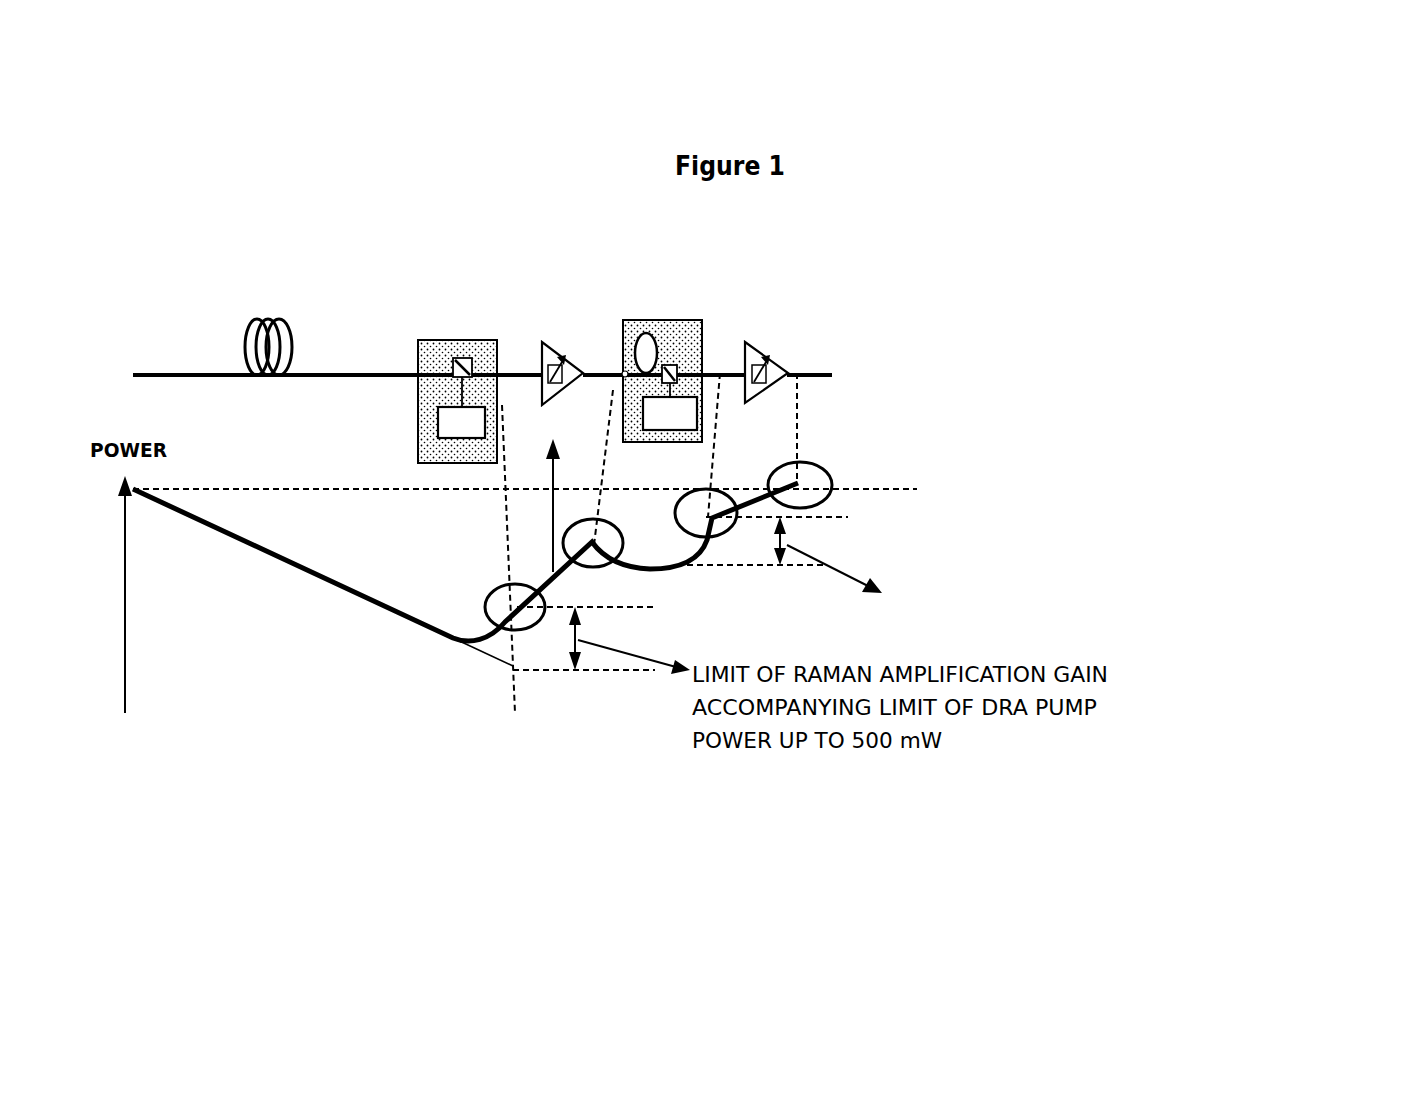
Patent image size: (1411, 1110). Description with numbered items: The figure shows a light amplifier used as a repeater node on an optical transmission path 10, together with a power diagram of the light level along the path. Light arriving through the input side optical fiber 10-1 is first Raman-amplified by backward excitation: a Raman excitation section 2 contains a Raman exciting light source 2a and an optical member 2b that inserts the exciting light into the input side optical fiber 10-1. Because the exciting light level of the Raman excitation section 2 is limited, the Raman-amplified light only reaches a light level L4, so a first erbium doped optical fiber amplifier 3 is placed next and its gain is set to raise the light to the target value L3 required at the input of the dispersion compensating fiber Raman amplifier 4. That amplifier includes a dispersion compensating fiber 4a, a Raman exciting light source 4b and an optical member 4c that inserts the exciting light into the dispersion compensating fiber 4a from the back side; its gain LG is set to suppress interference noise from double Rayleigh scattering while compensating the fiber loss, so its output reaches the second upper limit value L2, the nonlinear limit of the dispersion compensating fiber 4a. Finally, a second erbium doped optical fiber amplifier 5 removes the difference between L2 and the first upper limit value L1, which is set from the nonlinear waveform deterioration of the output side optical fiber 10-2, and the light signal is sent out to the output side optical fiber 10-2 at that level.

The optical transmission path 10 is at (181, 364).
The input side optical fiber 10-1 is at (277, 318).
The output side optical fiber 10-2 is at (815, 370).
The Raman excitation section 2 is at (425, 365).
The Raman exciting light source 2a is at (437, 420).
The optical member 2b is at (450, 367).
The first erbium doped optical fiber amplifier 3 is at (545, 344).
The dispersion compensating fiber Raman amplifier 4 is at (675, 364).
The dispersion compensating fiber 4a is at (647, 333).
The Raman exciting light source 4b is at (672, 430).
The optical member 4c is at (673, 365).
The second erbium doped optical fiber amplifier 5 is at (773, 360).
The first upper limit value L1 is at (721, 485).
The second upper limit value L2 is at (956, 513).
The target value L3 is at (595, 550).
The light level L4 is at (520, 617).
The gain LG is at (1045, 555).